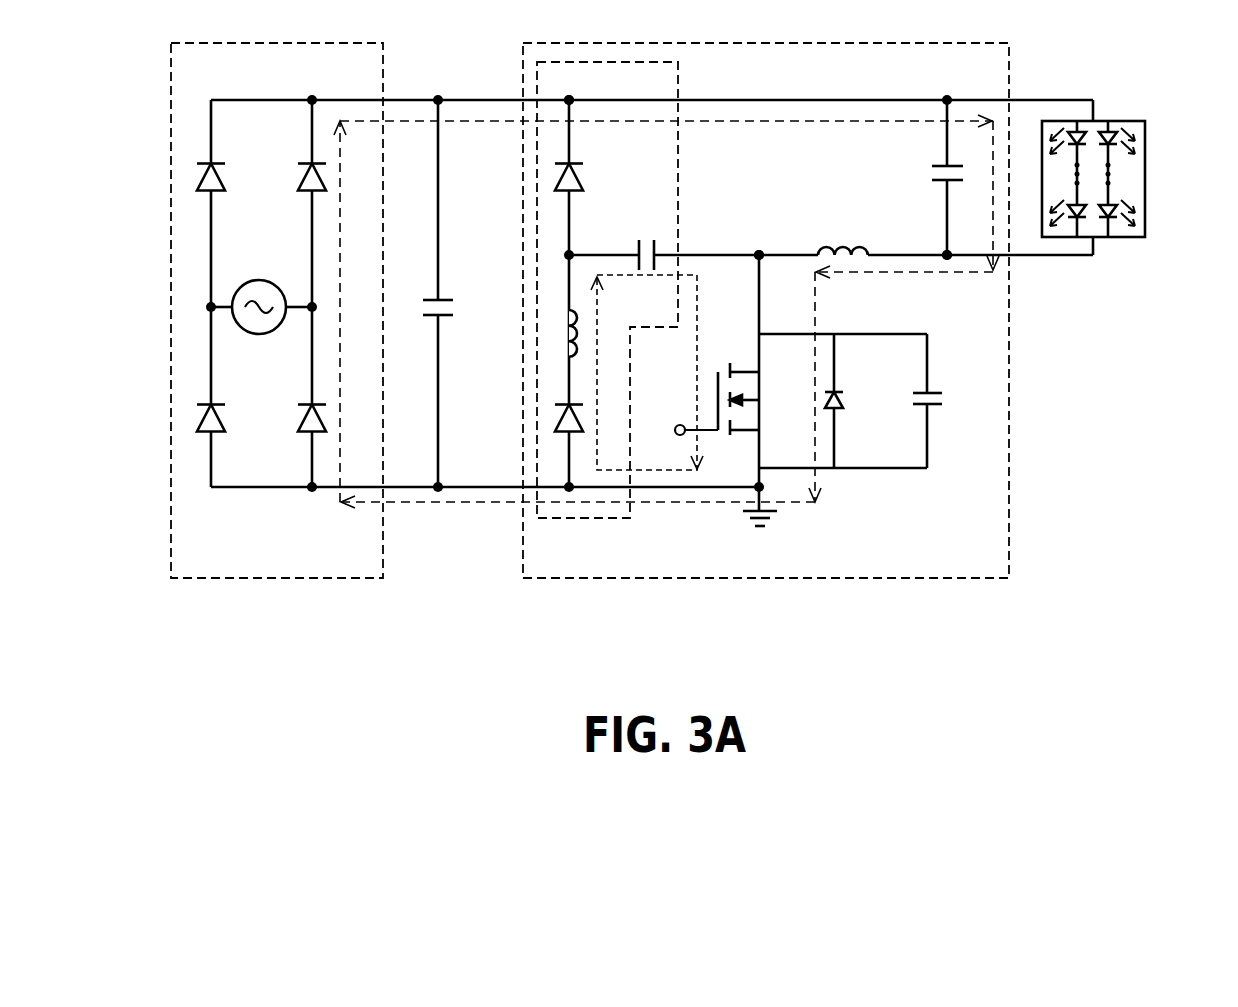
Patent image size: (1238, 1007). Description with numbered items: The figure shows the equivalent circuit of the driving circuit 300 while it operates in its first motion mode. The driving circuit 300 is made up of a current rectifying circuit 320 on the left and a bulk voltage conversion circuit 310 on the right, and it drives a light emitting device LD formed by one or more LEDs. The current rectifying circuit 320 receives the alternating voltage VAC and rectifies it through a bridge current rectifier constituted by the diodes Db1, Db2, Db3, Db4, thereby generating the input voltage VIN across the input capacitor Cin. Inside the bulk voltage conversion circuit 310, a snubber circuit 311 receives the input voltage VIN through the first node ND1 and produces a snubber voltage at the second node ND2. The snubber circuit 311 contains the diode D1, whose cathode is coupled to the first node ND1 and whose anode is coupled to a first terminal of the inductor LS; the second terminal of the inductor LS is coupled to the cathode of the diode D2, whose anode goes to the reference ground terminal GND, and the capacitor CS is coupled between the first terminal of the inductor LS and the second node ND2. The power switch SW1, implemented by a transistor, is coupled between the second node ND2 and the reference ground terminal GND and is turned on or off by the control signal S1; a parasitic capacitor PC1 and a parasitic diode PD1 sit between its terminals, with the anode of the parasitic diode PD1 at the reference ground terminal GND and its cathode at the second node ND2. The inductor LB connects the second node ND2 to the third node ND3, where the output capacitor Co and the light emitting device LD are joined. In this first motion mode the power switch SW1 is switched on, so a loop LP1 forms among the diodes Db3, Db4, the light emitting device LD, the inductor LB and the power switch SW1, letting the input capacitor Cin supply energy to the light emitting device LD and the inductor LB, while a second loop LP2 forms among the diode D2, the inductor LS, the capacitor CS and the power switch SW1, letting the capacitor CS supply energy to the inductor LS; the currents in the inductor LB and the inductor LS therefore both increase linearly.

The driving circuit 300 is at (1198, 655).
The bulk voltage conversion circuit 310 is at (833, 579).
The snubber circuit 311 is at (593, 518).
The current rectifying circuit 320 is at (213, 580).
The diode Db1 is at (233, 178).
The diode Db2 is at (233, 418).
The diode Db3 is at (333, 178).
The diode Db4 is at (333, 418).
The alternating voltage VAC is at (261, 283).
The input capacitor Cin is at (422, 293).
The input voltage VIN is at (438, 100).
The first node ND1 is at (572, 97).
The second node ND2 is at (757, 250).
The third node ND3 is at (947, 260).
The diode D1 is at (587, 180).
The diode D2 is at (585, 421).
The capacitor CS is at (647, 355).
The inductor LS is at (590, 335).
The control signal S1 is at (681, 430).
The power switch SW1 is at (766, 399).
The parasitic diode PD1 is at (858, 401).
The parasitic capacitor PC1 is at (952, 401).
The inductor LB is at (843, 272).
The output capacitor Co is at (933, 177).
The loop LP1 is at (812, 118).
The loop LP2 is at (815, 318).
The light emitting device LD is at (1133, 120).
The reference ground terminal GND is at (762, 528).